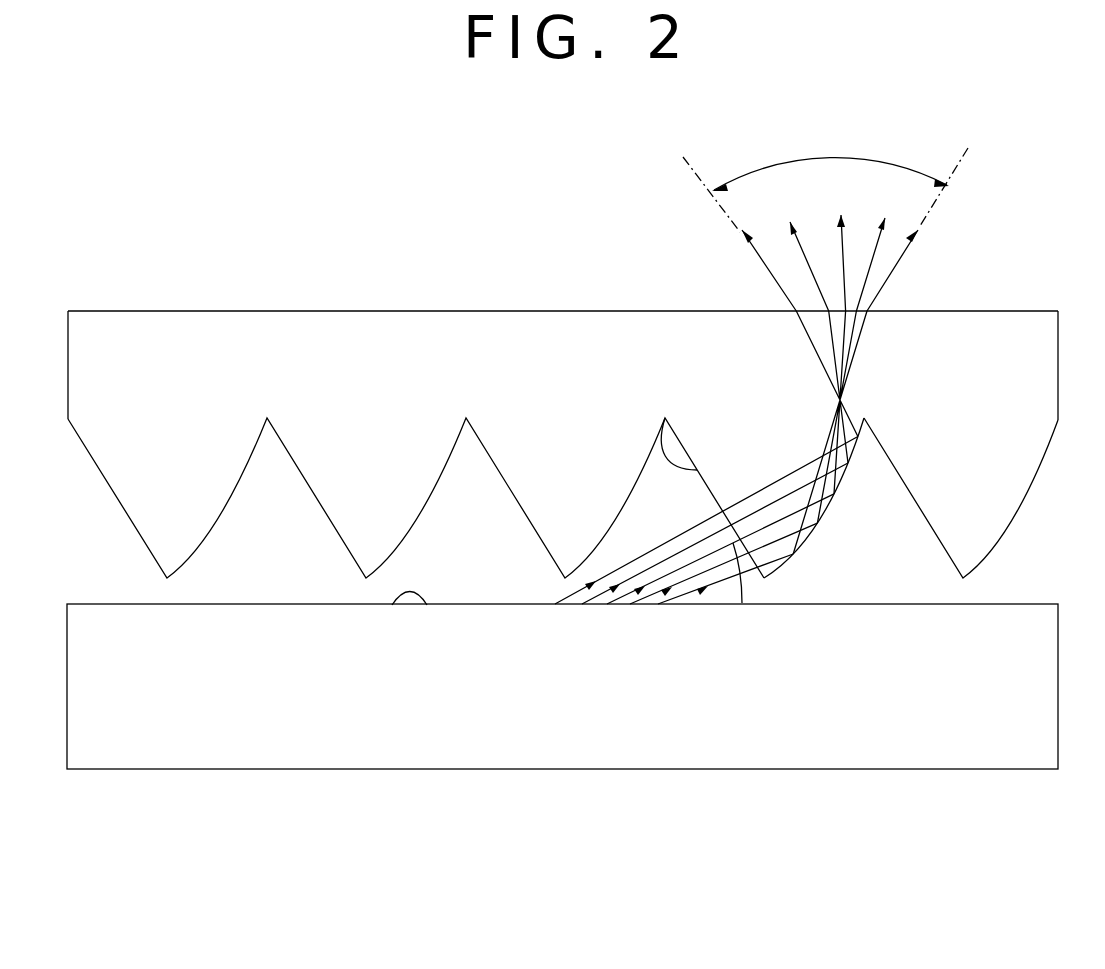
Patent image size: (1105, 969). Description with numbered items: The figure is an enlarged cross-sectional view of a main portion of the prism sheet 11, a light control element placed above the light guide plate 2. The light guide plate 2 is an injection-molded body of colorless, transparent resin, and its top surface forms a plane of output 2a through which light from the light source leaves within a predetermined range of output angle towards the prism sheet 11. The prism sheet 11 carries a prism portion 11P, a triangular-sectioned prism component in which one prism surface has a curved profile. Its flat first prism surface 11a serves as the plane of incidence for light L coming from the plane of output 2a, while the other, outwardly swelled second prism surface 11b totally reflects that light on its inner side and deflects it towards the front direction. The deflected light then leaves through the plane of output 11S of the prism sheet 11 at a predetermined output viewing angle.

The prism sheet 11 is at (574, 408).
The plane of output 11S is at (352, 310).
The prism portion 11P is at (563, 412).
The first prism surface 11a is at (697, 470).
The second prism surface 11b is at (837, 503).
The light guide plate 2 is at (562, 731).
The plane of output 2a is at (392, 605).
The light ray L is at (887, 278).